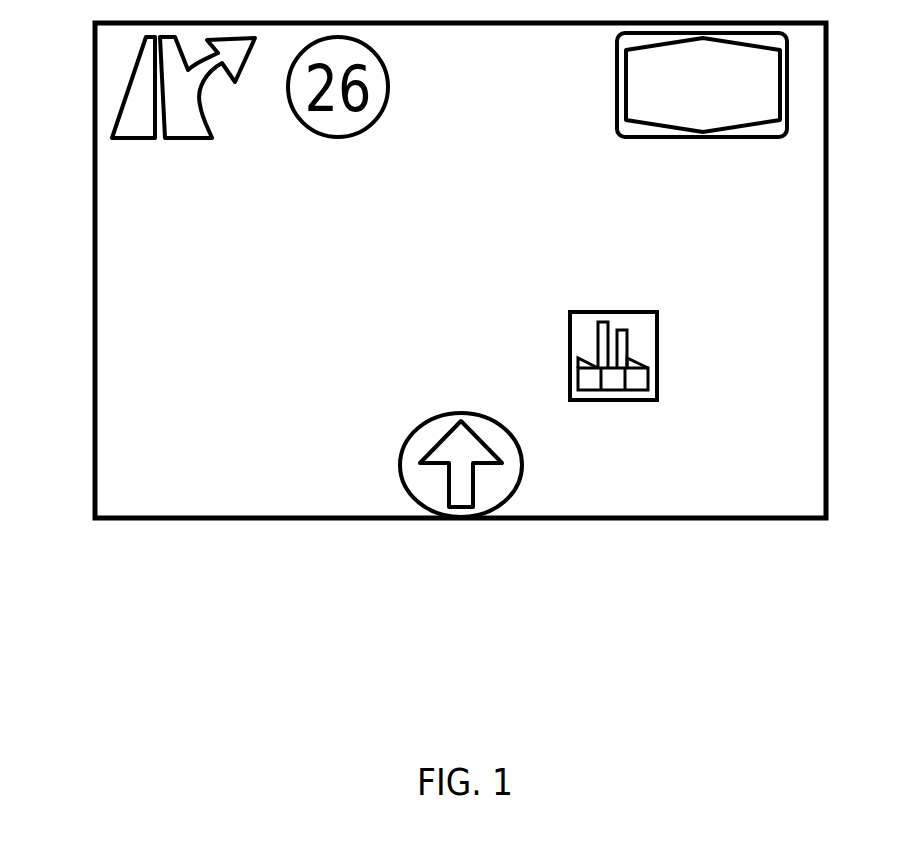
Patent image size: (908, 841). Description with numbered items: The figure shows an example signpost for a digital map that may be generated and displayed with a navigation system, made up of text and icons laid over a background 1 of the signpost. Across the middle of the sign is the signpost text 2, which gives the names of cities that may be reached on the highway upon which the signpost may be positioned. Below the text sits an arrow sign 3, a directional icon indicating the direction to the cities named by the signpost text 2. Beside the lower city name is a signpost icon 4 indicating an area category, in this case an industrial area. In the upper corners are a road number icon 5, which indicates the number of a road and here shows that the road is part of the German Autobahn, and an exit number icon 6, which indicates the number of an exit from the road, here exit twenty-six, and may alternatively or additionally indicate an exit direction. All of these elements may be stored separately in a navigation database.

The background 1 is at (615, 483).
The signpost text 2 is at (215, 233).
The arrow sign 3 is at (396, 497).
The signpost icon 4 is at (669, 372).
The road number icon 5 is at (772, 140).
The exit number icon 6 is at (175, 158).